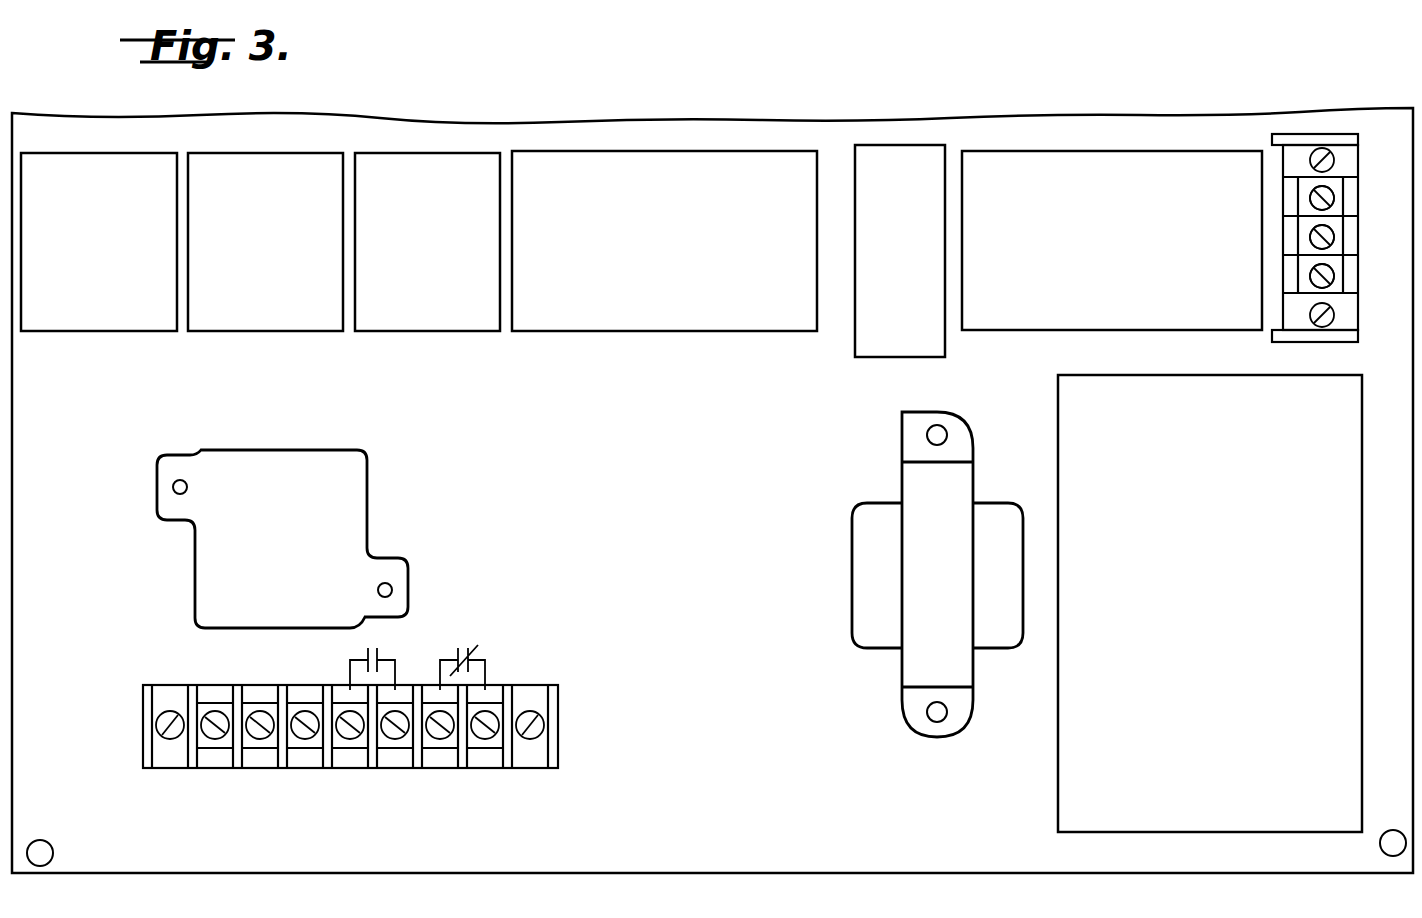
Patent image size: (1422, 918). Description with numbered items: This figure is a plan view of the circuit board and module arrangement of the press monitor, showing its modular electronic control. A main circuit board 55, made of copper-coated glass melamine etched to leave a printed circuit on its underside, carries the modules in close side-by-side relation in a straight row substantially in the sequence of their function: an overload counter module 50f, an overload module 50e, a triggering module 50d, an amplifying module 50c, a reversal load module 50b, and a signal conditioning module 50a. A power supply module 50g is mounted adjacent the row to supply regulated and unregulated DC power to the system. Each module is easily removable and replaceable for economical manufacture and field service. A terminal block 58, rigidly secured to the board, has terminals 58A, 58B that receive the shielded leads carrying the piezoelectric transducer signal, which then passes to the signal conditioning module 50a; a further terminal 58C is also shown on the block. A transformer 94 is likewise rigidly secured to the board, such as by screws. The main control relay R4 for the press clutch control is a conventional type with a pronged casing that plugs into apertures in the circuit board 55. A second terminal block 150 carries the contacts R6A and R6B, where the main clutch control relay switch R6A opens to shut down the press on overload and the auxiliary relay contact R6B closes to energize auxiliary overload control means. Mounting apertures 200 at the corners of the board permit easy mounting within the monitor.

The main circuit board 55 is at (605, 865).
The mounting holes 200 is at (50, 843).
The overload counter module 50f is at (103, 331).
The overload module 50e is at (287, 331).
The triggering module 50d is at (435, 331).
The amplifying module 50c is at (652, 331).
The reversal load module 50b is at (922, 357).
The signal conditioning module 50a is at (1100, 322).
The power supply module 50g is at (1060, 772).
The terminal block 58 is at (1333, 160).
The terminal 58A is at (1334, 201).
The terminal 58B is at (1334, 281).
The terminal 58C is at (1334, 243).
The main control relay R4 is at (355, 527).
The terminal block 150 is at (183, 688).
The main clutch control relay switch R6A is at (372, 652).
The auxiliary relay R6B is at (462, 648).
The transformer 94 is at (855, 588).